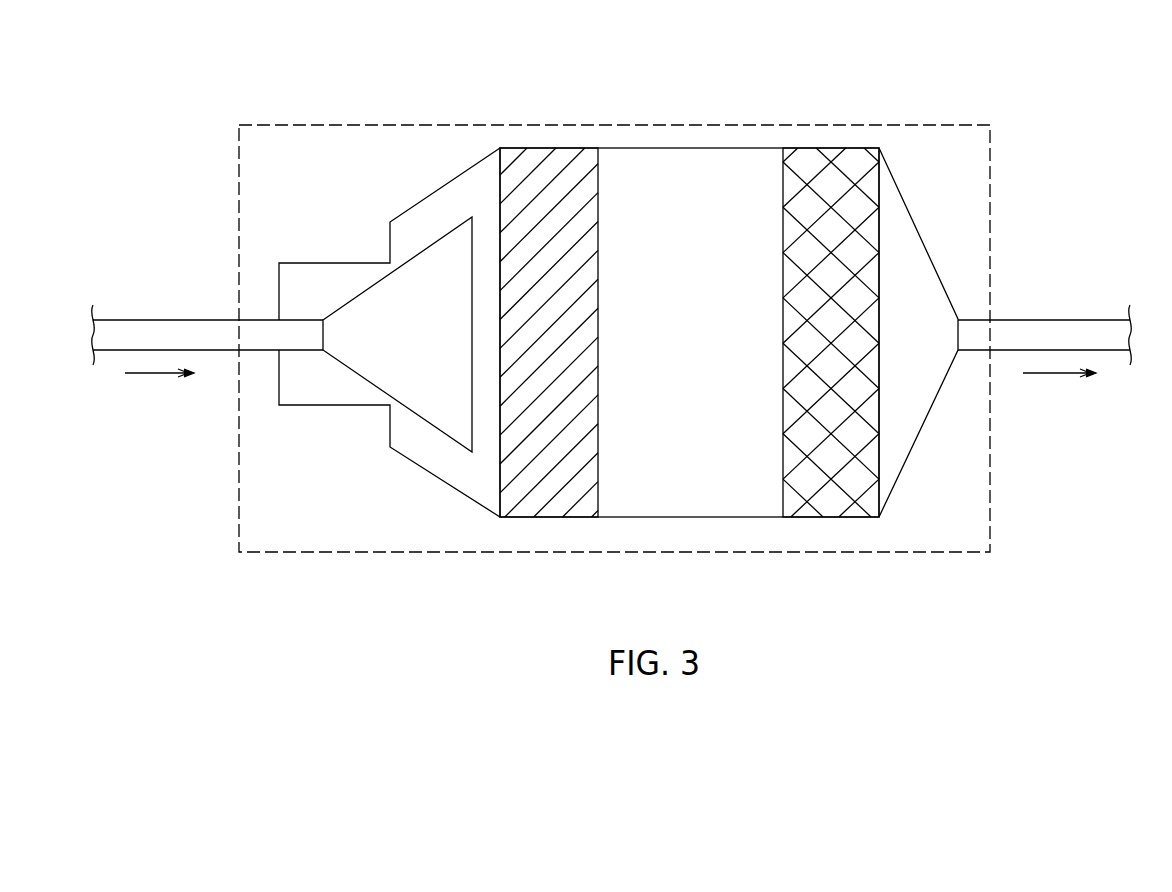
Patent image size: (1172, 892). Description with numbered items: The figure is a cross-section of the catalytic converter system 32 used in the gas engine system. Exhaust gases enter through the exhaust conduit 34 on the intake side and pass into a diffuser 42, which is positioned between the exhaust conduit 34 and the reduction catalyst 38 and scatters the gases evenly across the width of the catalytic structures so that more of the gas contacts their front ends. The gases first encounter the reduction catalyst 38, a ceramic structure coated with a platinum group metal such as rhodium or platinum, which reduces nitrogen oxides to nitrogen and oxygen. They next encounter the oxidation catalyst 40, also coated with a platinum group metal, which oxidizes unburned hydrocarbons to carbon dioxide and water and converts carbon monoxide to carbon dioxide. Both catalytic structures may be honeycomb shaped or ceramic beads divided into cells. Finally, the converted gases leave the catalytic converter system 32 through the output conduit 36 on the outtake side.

The catalytic converter system 32 is at (855, 125).
The exhaust conduit 34 is at (163, 319).
The output conduit 36 is at (1058, 319).
The reduction catalyst 38 is at (553, 518).
The oxidation catalyst 40 is at (833, 518).
The diffuser 42 is at (430, 426).